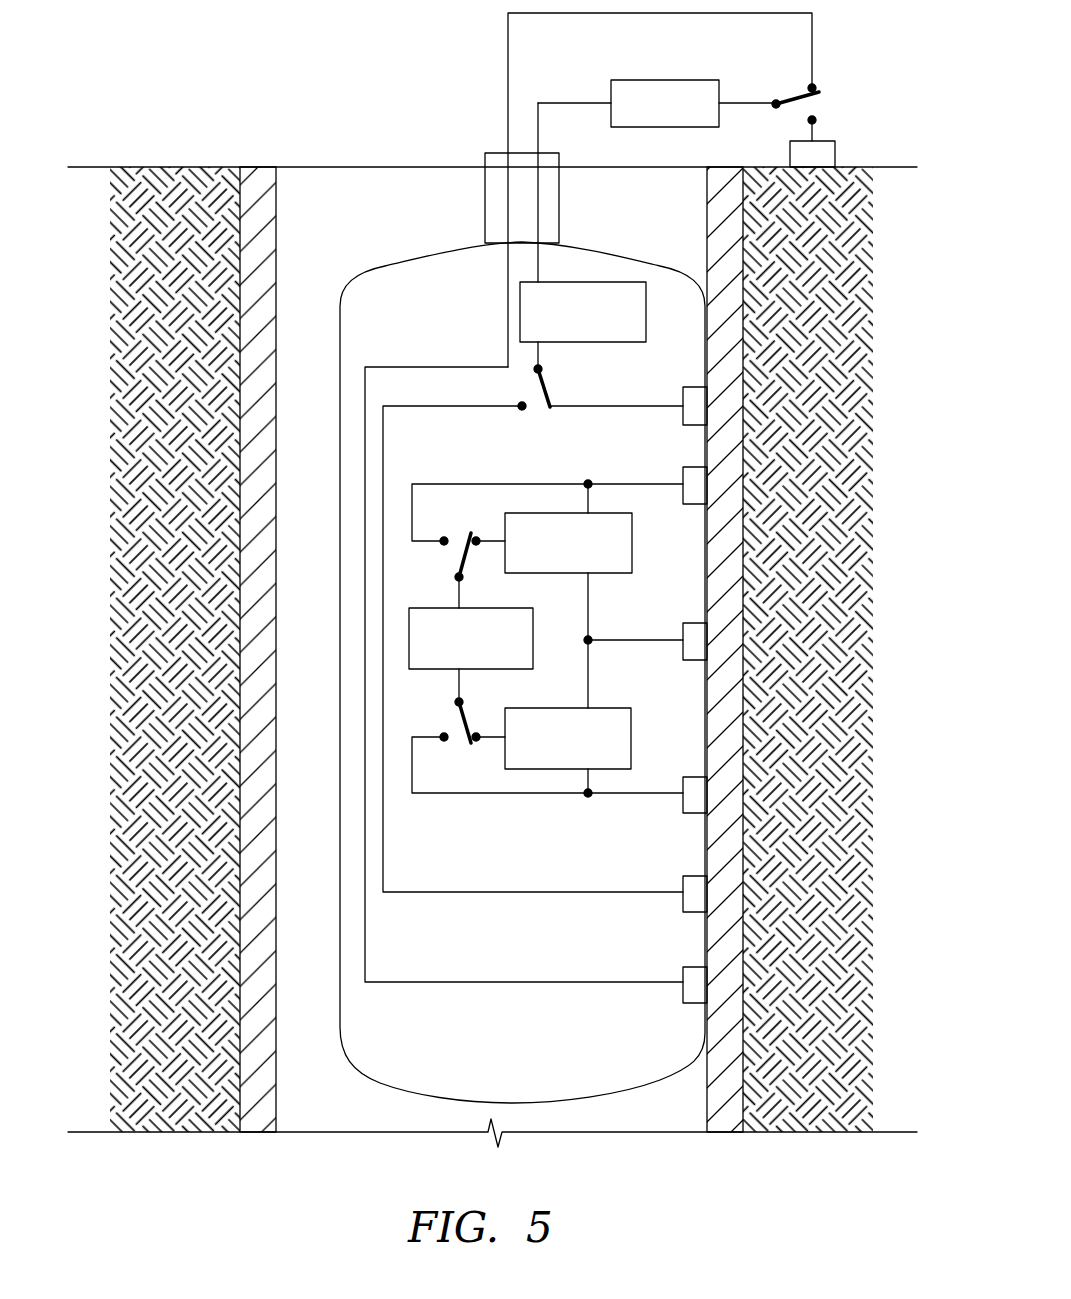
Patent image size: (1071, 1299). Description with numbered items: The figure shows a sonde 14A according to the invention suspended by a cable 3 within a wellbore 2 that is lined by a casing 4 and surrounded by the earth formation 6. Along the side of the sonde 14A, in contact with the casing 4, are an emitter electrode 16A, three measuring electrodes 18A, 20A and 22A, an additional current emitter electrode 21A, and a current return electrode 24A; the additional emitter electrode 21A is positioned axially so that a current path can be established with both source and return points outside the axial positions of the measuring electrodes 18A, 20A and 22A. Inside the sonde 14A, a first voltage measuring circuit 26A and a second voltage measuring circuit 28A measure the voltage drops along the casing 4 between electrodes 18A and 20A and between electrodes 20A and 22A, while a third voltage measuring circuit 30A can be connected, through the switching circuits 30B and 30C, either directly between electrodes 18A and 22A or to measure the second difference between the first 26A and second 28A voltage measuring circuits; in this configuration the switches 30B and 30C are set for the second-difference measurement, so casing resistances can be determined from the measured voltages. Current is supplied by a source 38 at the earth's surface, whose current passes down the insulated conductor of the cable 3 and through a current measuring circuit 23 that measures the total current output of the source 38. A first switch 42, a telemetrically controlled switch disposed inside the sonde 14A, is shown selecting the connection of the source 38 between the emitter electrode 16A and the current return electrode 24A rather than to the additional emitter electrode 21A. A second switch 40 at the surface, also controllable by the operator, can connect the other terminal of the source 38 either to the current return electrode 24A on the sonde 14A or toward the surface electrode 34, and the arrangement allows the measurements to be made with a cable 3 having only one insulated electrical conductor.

The wellbore 2 is at (742, 213).
The cable 3 is at (486, 221).
The casing 4 is at (726, 246).
The formation 6 is at (826, 681).
The sonde 14A is at (413, 246).
The emitter electrode 16A is at (695, 387).
The measuring electrode 18A is at (695, 467).
The measuring electrode 20A is at (695, 623).
The additional current emitter electrode 21A is at (695, 912).
The measuring electrode 22A is at (695, 813).
The current measuring circuit 23 is at (612, 282).
The current return electrode 24A is at (695, 1003).
The first voltage measuring circuit 26A is at (634, 545).
The second voltage measuring circuit 28A is at (633, 741).
The third voltage measuring circuit 30A is at (483, 608).
The switching circuit 30B is at (460, 556).
The switching circuit 30C is at (458, 718).
The surface electrode 34 is at (835, 151).
The source 38 is at (633, 80).
The second switch 40 is at (793, 92).
The first switch 42 is at (546, 383).